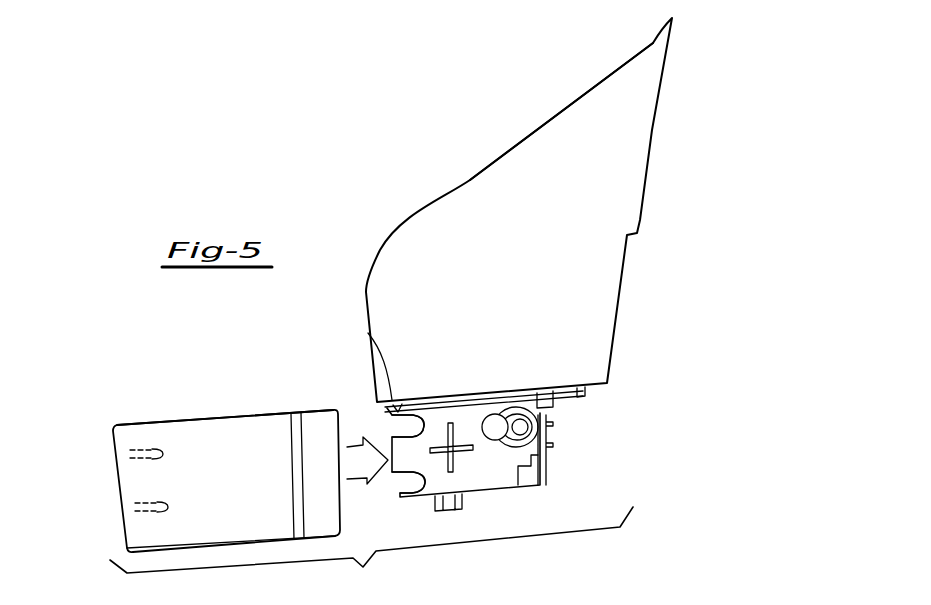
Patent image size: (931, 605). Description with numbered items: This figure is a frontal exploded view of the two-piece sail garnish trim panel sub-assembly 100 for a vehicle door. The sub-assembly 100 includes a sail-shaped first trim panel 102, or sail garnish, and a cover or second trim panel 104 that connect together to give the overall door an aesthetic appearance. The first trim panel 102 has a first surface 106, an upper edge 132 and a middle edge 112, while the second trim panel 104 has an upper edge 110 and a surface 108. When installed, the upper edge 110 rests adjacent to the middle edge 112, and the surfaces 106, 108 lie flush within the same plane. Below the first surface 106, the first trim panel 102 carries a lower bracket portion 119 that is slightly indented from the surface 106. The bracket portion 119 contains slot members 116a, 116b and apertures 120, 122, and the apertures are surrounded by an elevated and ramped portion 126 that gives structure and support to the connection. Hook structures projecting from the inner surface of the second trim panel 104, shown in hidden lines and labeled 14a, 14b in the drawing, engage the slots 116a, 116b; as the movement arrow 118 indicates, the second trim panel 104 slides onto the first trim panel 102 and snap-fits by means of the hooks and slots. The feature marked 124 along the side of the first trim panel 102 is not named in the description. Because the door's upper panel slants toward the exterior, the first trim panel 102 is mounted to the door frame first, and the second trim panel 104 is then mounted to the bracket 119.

The trim panel sub-assembly 100 is at (342, 228).
The first trim panel 102 is at (514, 157).
The second trim panel 104 is at (198, 532).
The first surface 106 is at (506, 262).
The surface 108 is at (251, 471).
The upper edge 110 is at (253, 414).
The middle edge 112 is at (547, 412).
The slot member 116a is at (410, 422).
The slot member 116b is at (398, 493).
The movement arrow 118 is at (365, 440).
The lower bracket portion 119 is at (492, 495).
The aperture 120 is at (494, 426).
The aperture 122 is at (547, 445).
The side flange 124 is at (367, 333).
The elevated and ramped portion 126 is at (548, 425).
The upper edge 132 is at (675, 15).
The upper clip 14a is at (137, 449).
The lower clip 14b is at (140, 508).